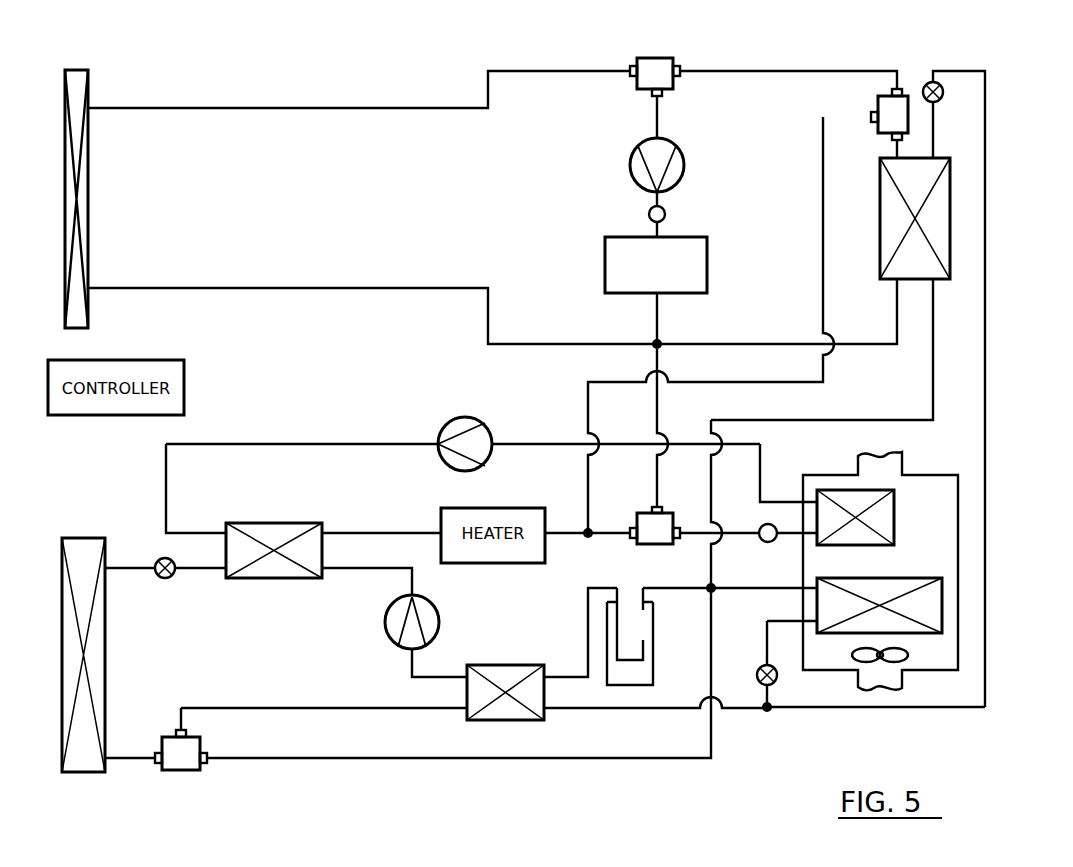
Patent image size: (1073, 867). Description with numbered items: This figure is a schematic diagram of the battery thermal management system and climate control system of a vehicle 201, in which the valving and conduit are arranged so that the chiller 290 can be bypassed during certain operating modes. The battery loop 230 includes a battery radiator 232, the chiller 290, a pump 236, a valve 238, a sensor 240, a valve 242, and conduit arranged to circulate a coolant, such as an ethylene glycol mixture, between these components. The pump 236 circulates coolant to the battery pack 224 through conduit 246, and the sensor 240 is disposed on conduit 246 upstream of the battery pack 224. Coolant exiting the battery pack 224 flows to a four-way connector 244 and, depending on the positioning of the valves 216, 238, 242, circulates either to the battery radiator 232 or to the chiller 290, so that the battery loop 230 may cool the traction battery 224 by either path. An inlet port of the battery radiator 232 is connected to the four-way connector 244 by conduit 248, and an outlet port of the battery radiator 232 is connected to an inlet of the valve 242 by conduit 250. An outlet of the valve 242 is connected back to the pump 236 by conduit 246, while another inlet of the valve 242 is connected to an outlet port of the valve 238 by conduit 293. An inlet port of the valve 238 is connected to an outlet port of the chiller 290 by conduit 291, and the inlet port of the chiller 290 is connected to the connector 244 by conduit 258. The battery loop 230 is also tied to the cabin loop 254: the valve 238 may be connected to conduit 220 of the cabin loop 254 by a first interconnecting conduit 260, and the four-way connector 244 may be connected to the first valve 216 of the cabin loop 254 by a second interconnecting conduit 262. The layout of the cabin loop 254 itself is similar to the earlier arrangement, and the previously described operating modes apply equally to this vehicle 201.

The vehicle 201 is at (274, 56).
The battery radiator 232 is at (90, 218).
The conduit 250 is at (238, 109).
The conduit 248 is at (253, 287).
The battery loop 230 is at (480, 248).
The valve 242 is at (653, 57).
The conduit 293 is at (732, 70).
The valve 238 is at (907, 95).
The pump 236 is at (687, 165).
The sensor 240 is at (666, 214).
The conduit 246 is at (653, 228).
The battery pack 224 is at (708, 270).
The four-way connector 244 is at (661, 340).
The conduit 258 is at (745, 343).
The first interconnecting conduit 260 is at (822, 214).
The chiller 290 is at (951, 205).
The conduit 291 is at (887, 150).
The second interconnecting conduit 262 is at (657, 470).
The first valve 216 is at (658, 546).
The conduit 220 is at (570, 535).
The cabin loop 254 is at (777, 458).